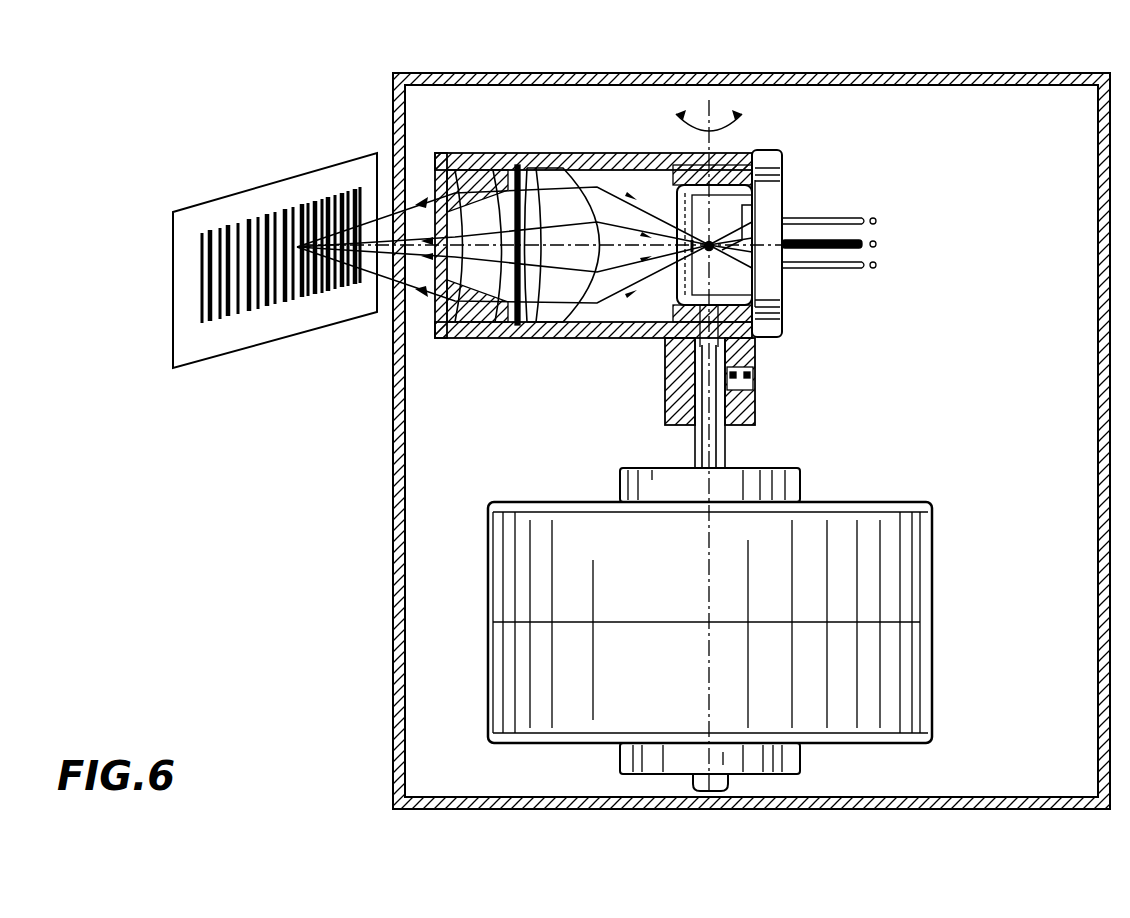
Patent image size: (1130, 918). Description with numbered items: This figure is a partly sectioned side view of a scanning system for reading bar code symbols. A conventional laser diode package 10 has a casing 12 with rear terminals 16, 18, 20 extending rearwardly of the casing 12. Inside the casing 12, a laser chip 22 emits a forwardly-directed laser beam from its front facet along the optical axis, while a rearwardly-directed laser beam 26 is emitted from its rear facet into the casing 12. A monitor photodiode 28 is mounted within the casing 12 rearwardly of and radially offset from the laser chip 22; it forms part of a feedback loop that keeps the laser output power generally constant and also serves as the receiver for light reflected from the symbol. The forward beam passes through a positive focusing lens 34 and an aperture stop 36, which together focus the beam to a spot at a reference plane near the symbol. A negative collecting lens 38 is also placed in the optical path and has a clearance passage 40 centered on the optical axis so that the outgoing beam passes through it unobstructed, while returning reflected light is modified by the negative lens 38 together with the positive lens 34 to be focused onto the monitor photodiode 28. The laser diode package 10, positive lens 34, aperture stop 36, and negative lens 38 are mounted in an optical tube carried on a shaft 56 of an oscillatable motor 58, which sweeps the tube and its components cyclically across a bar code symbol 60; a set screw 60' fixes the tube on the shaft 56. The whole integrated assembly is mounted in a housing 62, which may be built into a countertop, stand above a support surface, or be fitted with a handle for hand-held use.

The laser diode package 10 is at (818, 151).
The casing 12 is at (724, 167).
The rear terminal 16 is at (848, 219).
The rear terminal 18 is at (838, 270).
The rear terminal 20 is at (857, 247).
The laser chip 22 is at (713, 251).
The rearwardly-directed laser beam 26 is at (722, 251).
The monitor photodiode 28 is at (751, 208).
The positive focusing lens 34 is at (581, 160).
The aperture stop 36 is at (545, 162).
The negative collecting lens 38 is at (492, 185).
The clearance passage 40 is at (471, 217).
The shaft 56 is at (727, 452).
The oscillatable motor 58 is at (932, 532).
The bar code symbol 60 is at (275, 250).
The bearing 60' is at (747, 381).
The housing 62 is at (1109, 97).